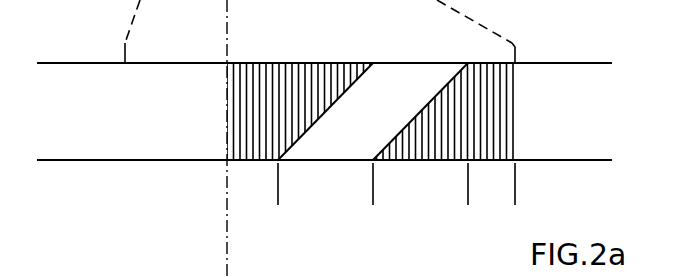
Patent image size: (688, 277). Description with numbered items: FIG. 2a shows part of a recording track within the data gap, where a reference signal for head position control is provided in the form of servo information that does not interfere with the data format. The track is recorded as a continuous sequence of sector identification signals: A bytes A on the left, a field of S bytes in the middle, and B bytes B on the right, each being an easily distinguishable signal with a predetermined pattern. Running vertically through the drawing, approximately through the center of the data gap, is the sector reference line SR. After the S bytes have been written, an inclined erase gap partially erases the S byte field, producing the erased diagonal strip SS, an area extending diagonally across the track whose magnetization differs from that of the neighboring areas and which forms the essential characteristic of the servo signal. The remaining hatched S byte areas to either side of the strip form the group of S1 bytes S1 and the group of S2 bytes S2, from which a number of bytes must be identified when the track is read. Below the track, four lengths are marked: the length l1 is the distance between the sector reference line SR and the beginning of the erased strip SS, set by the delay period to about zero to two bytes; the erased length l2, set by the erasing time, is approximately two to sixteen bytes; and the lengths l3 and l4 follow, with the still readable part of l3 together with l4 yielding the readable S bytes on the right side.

The sector reference line SR is at (227, 222).
The group of S1 bytes S1 is at (286, 70).
The group of S2 bytes S2 is at (463, 88).
The erased diagonal strip SS is at (392, 80).
The A bytes A is at (121, 117).
The B bytes B is at (579, 117).
The length l1 is at (278, 186).
The erased length l2 is at (373, 186).
The length l3 is at (468, 186).
The length l4 is at (515, 186).